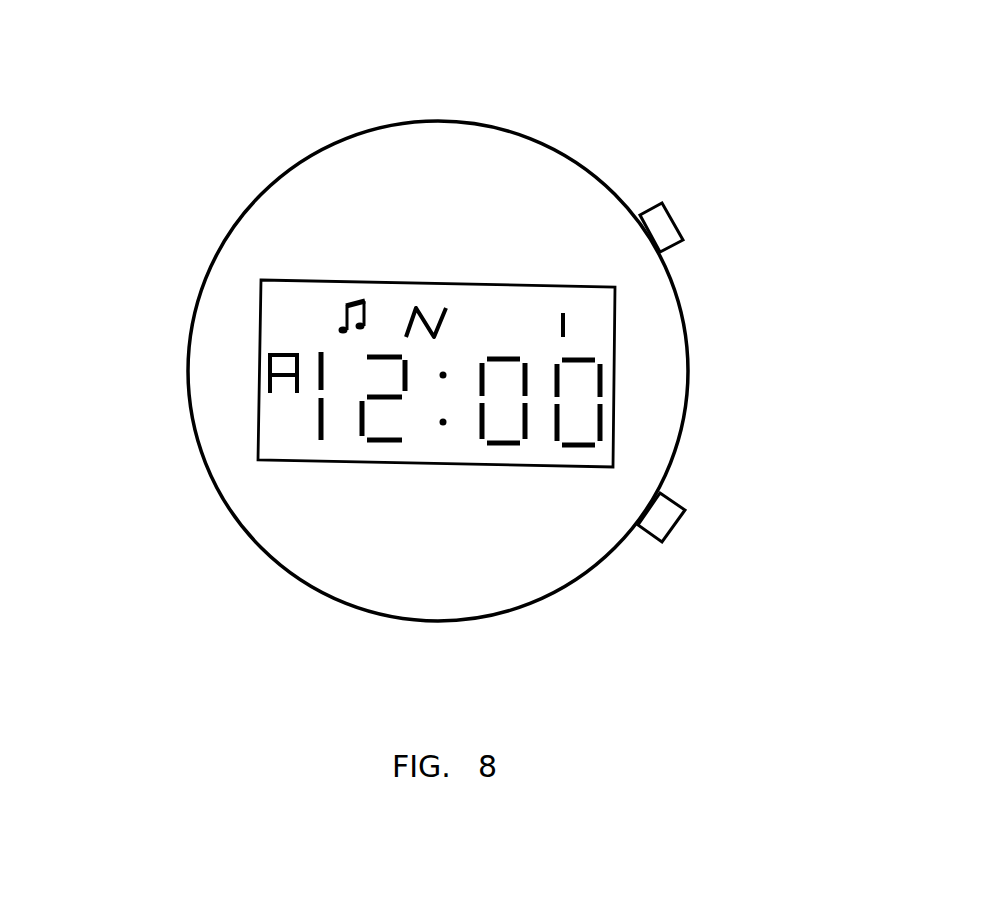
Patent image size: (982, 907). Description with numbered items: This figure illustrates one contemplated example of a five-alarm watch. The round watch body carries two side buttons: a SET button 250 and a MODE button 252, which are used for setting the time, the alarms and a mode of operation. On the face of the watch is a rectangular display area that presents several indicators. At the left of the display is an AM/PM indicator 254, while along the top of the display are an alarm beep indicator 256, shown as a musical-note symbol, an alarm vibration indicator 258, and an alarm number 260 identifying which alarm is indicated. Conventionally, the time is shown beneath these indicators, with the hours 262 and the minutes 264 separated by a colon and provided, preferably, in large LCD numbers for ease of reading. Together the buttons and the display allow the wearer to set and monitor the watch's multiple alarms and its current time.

The SET button 250 is at (753, 205).
The MODE button 252 is at (749, 527).
The AM/PM indicator 254 is at (171, 376).
The alarm beep indicator 256 is at (274, 194).
The alarm vibration indicator 258 is at (408, 176).
The alarm number 260 is at (441, 250).
The hours 262 is at (316, 527).
The minutes 264 is at (561, 544).